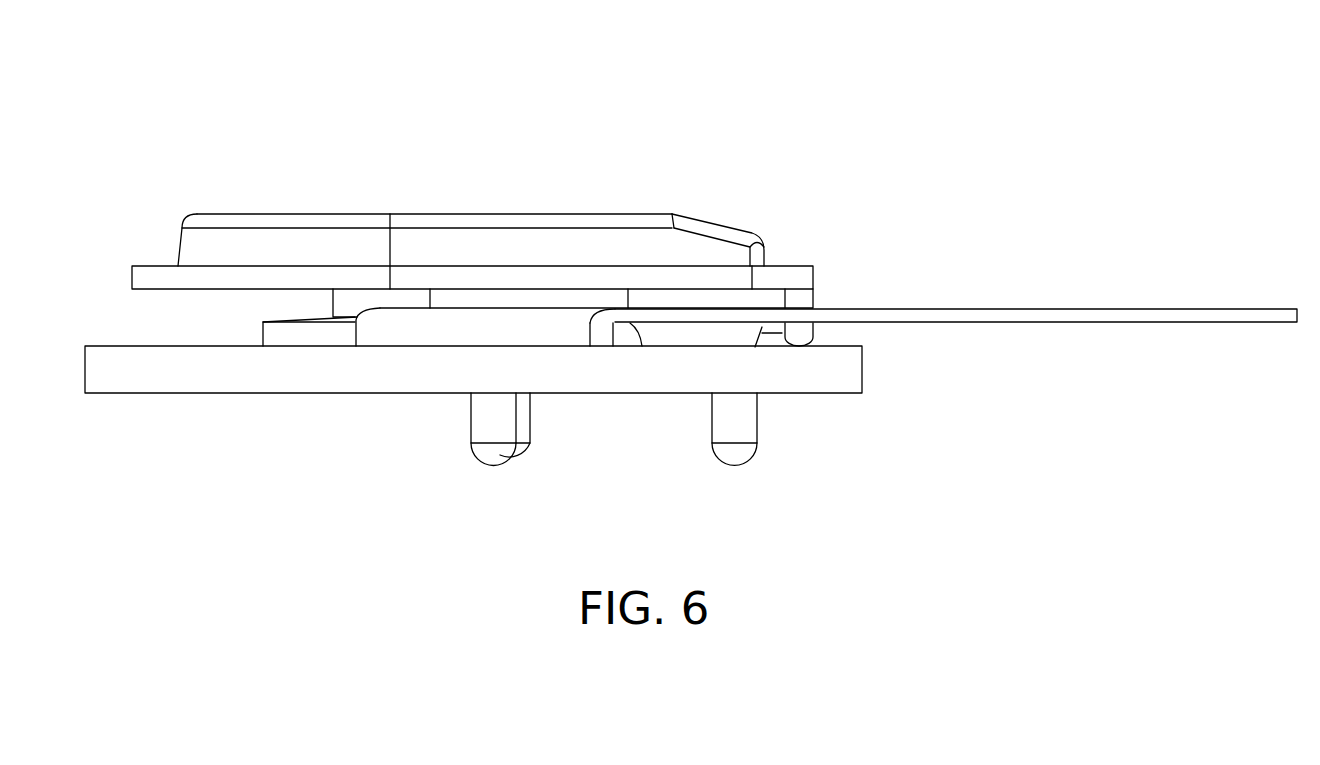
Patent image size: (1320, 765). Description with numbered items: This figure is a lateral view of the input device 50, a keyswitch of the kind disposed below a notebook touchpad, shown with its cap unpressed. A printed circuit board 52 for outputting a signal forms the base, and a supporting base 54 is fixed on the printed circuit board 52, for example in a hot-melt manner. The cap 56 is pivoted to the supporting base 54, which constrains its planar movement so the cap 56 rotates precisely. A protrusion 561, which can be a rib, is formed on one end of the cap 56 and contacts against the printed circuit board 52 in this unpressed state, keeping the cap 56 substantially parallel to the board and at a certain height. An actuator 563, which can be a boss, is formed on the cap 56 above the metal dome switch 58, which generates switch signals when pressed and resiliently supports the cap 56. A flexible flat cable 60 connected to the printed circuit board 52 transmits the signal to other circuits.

The input device 50 is at (1090, 148).
The printed circuit board 52 is at (866, 378).
The supporting base 54 is at (388, 333).
The cap 56 is at (712, 214).
The protrusion 561 is at (803, 298).
The actuator 563 is at (348, 303).
The metal dome switch 58 is at (286, 337).
The flexible flat cable 60 is at (1165, 316).